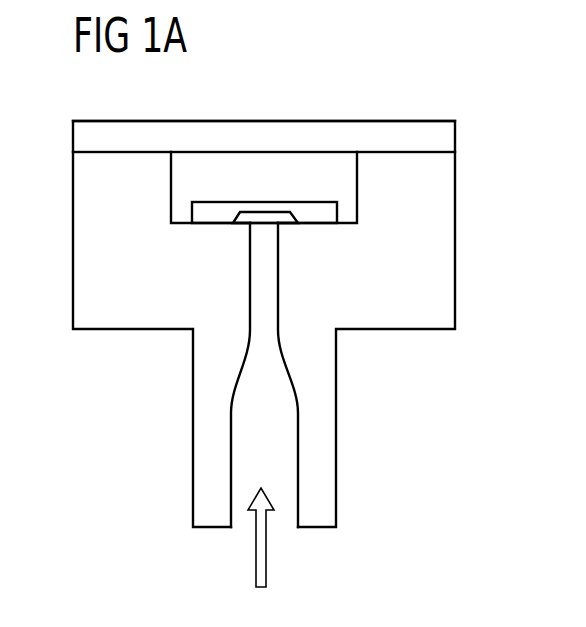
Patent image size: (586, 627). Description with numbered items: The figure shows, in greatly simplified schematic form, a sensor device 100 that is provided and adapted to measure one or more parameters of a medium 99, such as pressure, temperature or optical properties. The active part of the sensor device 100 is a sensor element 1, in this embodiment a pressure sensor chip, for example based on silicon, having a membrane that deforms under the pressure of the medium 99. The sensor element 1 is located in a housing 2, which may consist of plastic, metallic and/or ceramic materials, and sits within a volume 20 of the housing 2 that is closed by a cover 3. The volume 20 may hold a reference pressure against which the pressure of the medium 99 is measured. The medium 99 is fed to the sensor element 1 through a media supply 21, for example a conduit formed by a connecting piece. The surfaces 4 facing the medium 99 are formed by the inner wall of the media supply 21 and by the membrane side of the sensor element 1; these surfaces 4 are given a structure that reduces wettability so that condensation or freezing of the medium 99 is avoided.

The sensor device 100 is at (441, 86).
The volume 20 is at (235, 121).
The cover 3 is at (447, 140).
The housing 2 is at (447, 259).
The media supply 21 is at (288, 497).
The sensor element 1 is at (336, 210).
The surfaces 4 is at (270, 224).
The medium 99 is at (266, 561).